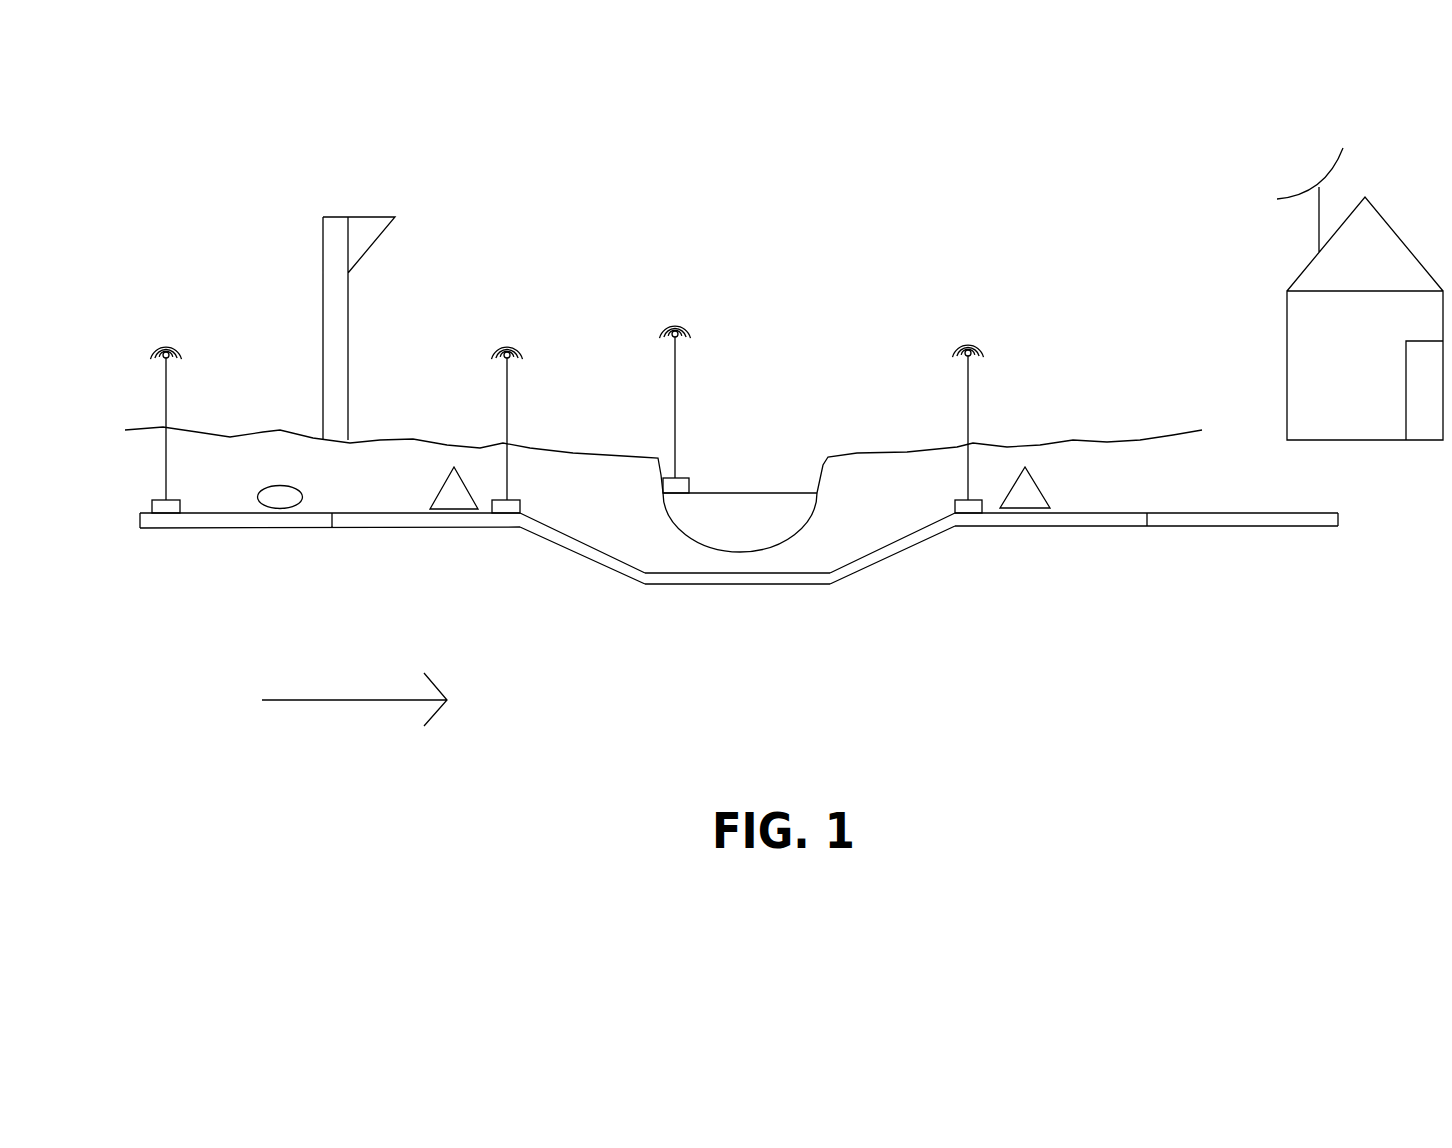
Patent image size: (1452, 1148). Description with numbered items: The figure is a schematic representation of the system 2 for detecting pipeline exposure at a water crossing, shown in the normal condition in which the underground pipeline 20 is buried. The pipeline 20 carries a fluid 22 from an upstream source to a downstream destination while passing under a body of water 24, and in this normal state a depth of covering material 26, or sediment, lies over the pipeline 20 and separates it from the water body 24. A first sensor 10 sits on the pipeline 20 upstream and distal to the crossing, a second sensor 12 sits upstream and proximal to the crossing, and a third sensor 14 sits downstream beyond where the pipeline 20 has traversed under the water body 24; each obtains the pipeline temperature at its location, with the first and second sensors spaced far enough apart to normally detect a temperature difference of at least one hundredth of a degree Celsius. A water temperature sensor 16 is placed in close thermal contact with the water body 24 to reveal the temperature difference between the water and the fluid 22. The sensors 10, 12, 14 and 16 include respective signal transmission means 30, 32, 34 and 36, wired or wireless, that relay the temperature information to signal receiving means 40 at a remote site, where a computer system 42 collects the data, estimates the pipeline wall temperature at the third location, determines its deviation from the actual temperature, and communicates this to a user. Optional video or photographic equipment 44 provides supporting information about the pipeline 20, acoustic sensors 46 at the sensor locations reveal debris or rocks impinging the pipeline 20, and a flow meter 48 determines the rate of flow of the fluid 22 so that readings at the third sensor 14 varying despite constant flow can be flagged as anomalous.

The system 2 is at (928, 208).
The first sensor 10 is at (170, 510).
The second sensor 12 is at (510, 510).
The third sensor 14 is at (968, 510).
The water temperature sensor 16 is at (673, 487).
The underground pipeline 20 is at (1233, 488).
The fluid 22 is at (750, 580).
The body of water 24 is at (739, 470).
The covering material 26 is at (842, 525).
The signal transmission means 30 is at (166, 318).
The signal transmission means 32 is at (507, 318).
The signal transmission means 34 is at (968, 318).
The signal transmission means 36 is at (677, 295).
The signal receiving means 40 is at (1294, 198).
The computer system 42 is at (1427, 427).
The video or photographic equipment 44 is at (335, 240).
The acoustic sensors 46 is at (455, 500).
The flow meter 48 is at (280, 503).